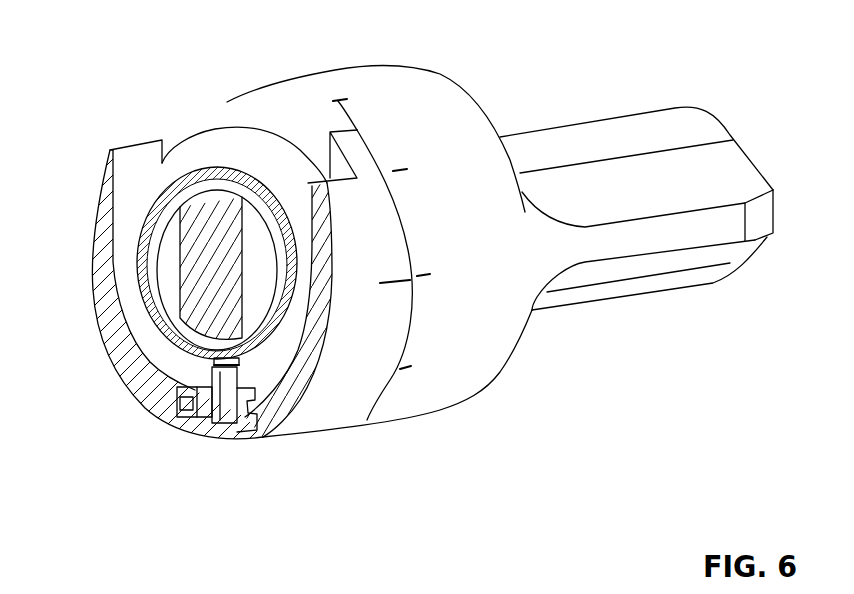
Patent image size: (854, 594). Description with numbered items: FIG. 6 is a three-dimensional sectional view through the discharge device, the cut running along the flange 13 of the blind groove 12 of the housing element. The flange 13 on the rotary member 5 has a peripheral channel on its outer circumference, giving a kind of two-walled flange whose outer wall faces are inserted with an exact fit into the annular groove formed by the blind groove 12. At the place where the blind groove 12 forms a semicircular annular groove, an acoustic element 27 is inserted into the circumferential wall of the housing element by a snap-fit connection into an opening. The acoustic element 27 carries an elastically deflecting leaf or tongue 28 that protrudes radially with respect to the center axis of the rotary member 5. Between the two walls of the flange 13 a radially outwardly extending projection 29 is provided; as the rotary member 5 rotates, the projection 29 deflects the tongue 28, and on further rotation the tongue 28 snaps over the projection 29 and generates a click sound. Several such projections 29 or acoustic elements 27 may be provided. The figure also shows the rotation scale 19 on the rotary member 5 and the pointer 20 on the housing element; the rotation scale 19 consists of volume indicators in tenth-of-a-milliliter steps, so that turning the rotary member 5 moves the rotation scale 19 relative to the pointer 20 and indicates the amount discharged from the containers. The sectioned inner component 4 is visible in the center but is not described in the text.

The piston 4 is at (208, 248).
The rotary member 5 is at (451, 68).
The blind groove 12 is at (128, 167).
The flange 13 is at (208, 147).
The rotation scale 19 is at (493, 278).
The pointer 20 is at (390, 283).
The acoustic element 27 is at (203, 424).
The tongue 28 is at (213, 426).
The projection 29 is at (215, 362).